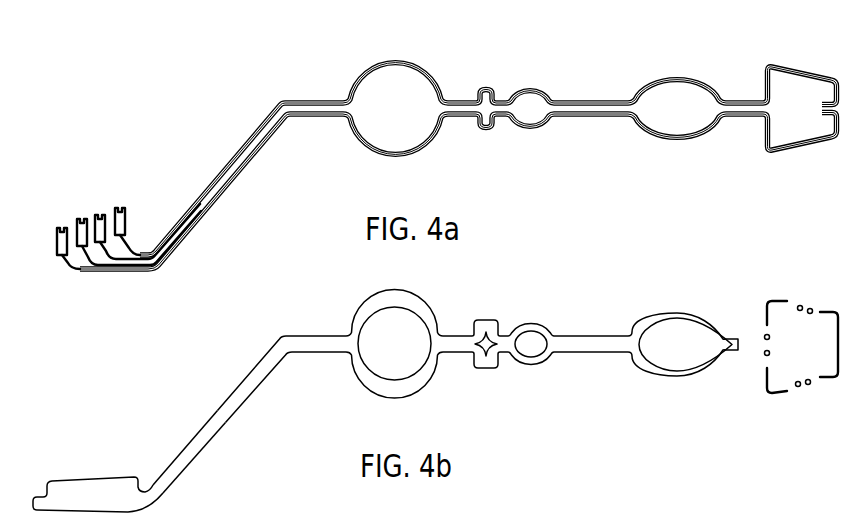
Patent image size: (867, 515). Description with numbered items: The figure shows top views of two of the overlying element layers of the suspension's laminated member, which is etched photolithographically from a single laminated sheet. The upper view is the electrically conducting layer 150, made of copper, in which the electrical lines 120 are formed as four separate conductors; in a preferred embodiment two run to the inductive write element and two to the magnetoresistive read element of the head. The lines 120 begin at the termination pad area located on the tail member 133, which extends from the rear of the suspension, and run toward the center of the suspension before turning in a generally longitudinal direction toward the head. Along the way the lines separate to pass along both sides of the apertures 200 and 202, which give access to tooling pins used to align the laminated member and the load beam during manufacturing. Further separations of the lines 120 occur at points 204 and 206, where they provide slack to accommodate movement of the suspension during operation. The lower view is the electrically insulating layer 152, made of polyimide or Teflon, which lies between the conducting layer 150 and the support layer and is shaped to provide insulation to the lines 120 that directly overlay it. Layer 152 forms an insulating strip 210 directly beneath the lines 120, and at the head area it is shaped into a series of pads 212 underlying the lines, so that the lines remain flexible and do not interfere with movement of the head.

In FIG. 4A, the electrical lines 120 is at (498, 100).
In FIG. 4A, the tail member 133 is at (197, 223).
In FIG. 4B, the tail member 133 is at (198, 458).
In FIG. 4A, the electrically conducting layer 150 is at (582, 100).
In FIG. 4B, the electrically insulating layer 152 is at (567, 340).
In FIG. 4A, the aperture 200 is at (392, 100).
In FIG. 4B, the aperture 200 is at (396, 332).
In FIG. 4A, the aperture 202 is at (672, 100).
In FIG. 4B, the aperture 202 is at (682, 328).
In FIG. 4A, the separation point 204 is at (486, 90).
In FIG. 4A, the separation point 206 is at (530, 103).
In FIG. 4B, the insulating strip 210 is at (205, 422).
In FIG. 4B, the pads 212 is at (838, 290).